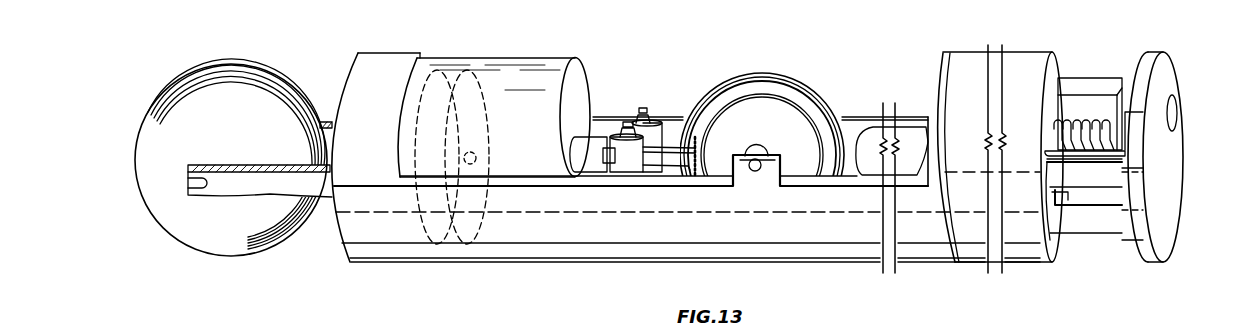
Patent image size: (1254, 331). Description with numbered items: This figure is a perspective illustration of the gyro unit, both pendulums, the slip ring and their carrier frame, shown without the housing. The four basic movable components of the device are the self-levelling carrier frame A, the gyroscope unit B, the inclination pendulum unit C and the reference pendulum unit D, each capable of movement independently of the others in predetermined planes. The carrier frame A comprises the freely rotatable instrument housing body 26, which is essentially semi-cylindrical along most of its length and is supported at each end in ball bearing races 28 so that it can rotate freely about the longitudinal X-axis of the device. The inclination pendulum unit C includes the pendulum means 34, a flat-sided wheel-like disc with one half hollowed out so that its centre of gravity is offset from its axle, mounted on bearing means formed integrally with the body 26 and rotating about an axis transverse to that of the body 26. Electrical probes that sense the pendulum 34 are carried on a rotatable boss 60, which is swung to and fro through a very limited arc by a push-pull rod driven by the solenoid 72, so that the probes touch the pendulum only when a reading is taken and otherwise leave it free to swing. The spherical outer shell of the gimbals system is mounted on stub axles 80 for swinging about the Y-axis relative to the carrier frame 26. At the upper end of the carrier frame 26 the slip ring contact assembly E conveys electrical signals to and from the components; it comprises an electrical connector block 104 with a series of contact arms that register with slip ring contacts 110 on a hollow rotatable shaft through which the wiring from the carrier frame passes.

The self-levelling carrier frame A is at (668, 275).
The gyroscope unit B is at (209, 244).
The inclination pendulum unit C is at (832, 92).
The reference pendulum unit D is at (427, 220).
The slip ring contact assembly E is at (1085, 160).
The body 26 is at (823, 182).
The ball bearing races 28 is at (362, 166).
The pendulum means 34 is at (747, 90).
The rotatable boss 60 is at (618, 125).
The solenoid 72 is at (515, 152).
The stub axles 80 is at (390, 330).
The electrical connector block 104 is at (1082, 87).
The slip ring contacts 110 is at (1088, 122).